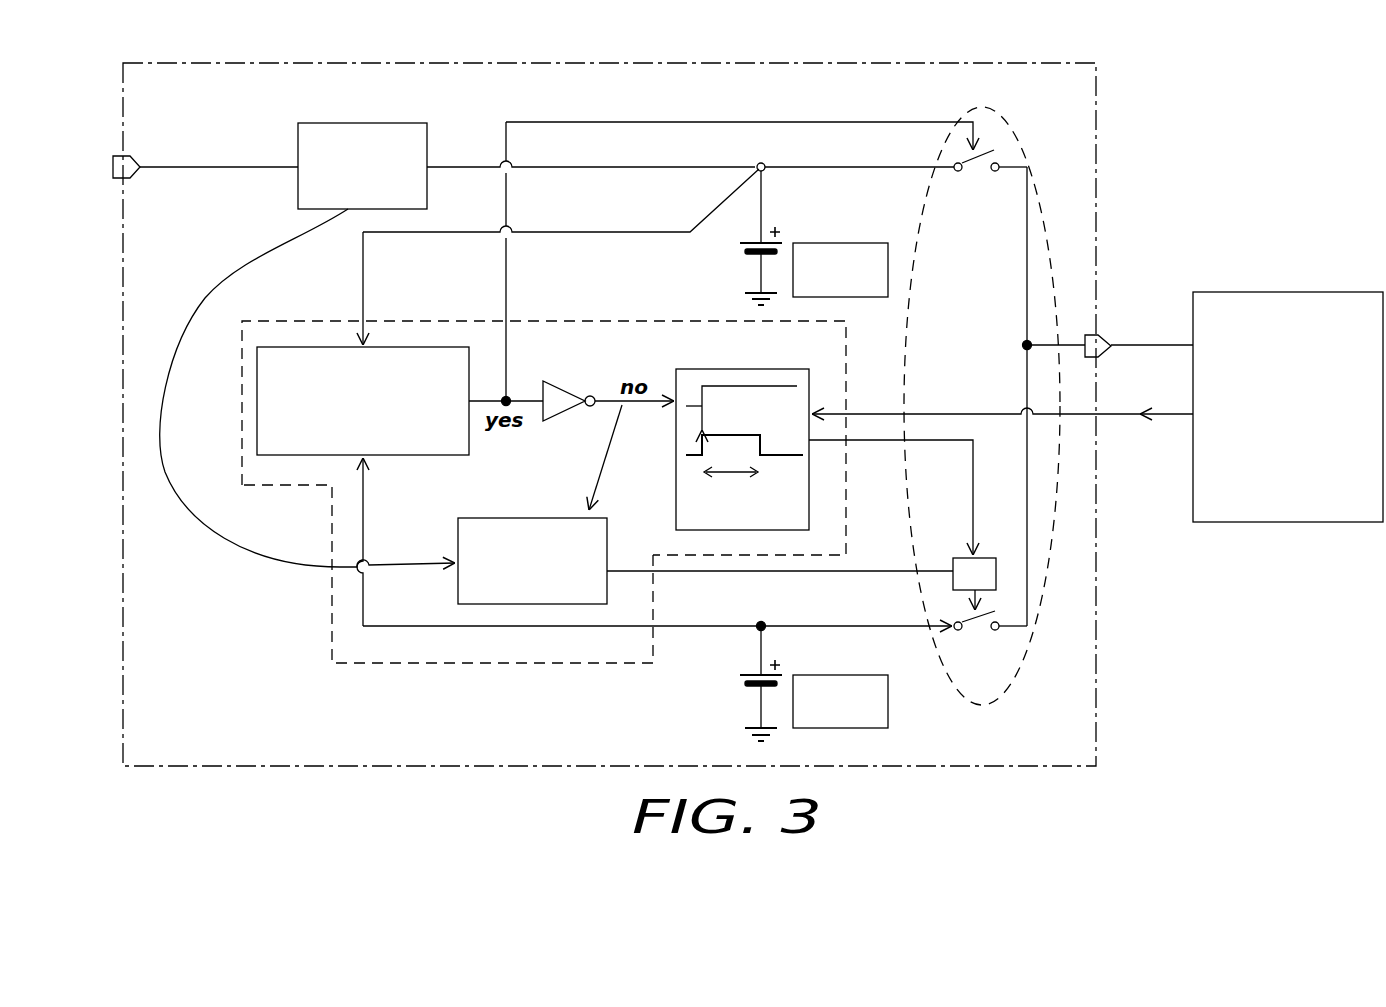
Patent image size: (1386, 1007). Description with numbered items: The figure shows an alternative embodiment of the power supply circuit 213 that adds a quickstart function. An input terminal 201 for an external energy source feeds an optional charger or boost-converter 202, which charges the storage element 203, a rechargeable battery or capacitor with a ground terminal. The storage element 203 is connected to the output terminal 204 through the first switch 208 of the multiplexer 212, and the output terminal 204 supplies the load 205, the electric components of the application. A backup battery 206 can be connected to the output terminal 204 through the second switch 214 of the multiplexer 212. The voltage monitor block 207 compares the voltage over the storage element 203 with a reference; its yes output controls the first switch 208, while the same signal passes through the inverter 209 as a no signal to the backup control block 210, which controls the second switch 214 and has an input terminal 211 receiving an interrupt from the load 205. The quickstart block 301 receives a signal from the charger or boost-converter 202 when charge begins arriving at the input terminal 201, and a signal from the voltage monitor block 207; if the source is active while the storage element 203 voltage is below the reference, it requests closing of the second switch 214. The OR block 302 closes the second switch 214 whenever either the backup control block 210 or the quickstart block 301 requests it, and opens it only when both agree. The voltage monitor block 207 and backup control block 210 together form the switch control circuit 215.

The input terminal 201 is at (133, 180).
The charger or boost-converter 202 is at (356, 122).
The storage element 203 is at (735, 246).
The output terminal 204 is at (1100, 358).
The load 205 is at (1259, 291).
The backup battery 206 is at (735, 678).
The voltage monitor block 207 is at (257, 398).
The first switch 208 is at (978, 183).
The inverter 209 is at (572, 386).
The backup control block 210 is at (676, 492).
The input terminal 211 is at (770, 432).
The multiplexer 212 is at (984, 708).
The power supply circuit 213 is at (1097, 572).
The second switch 214 is at (978, 641).
The switch control circuit 215 is at (396, 665).
The quickstart block 301 is at (515, 517).
The OR block 302 is at (952, 557).